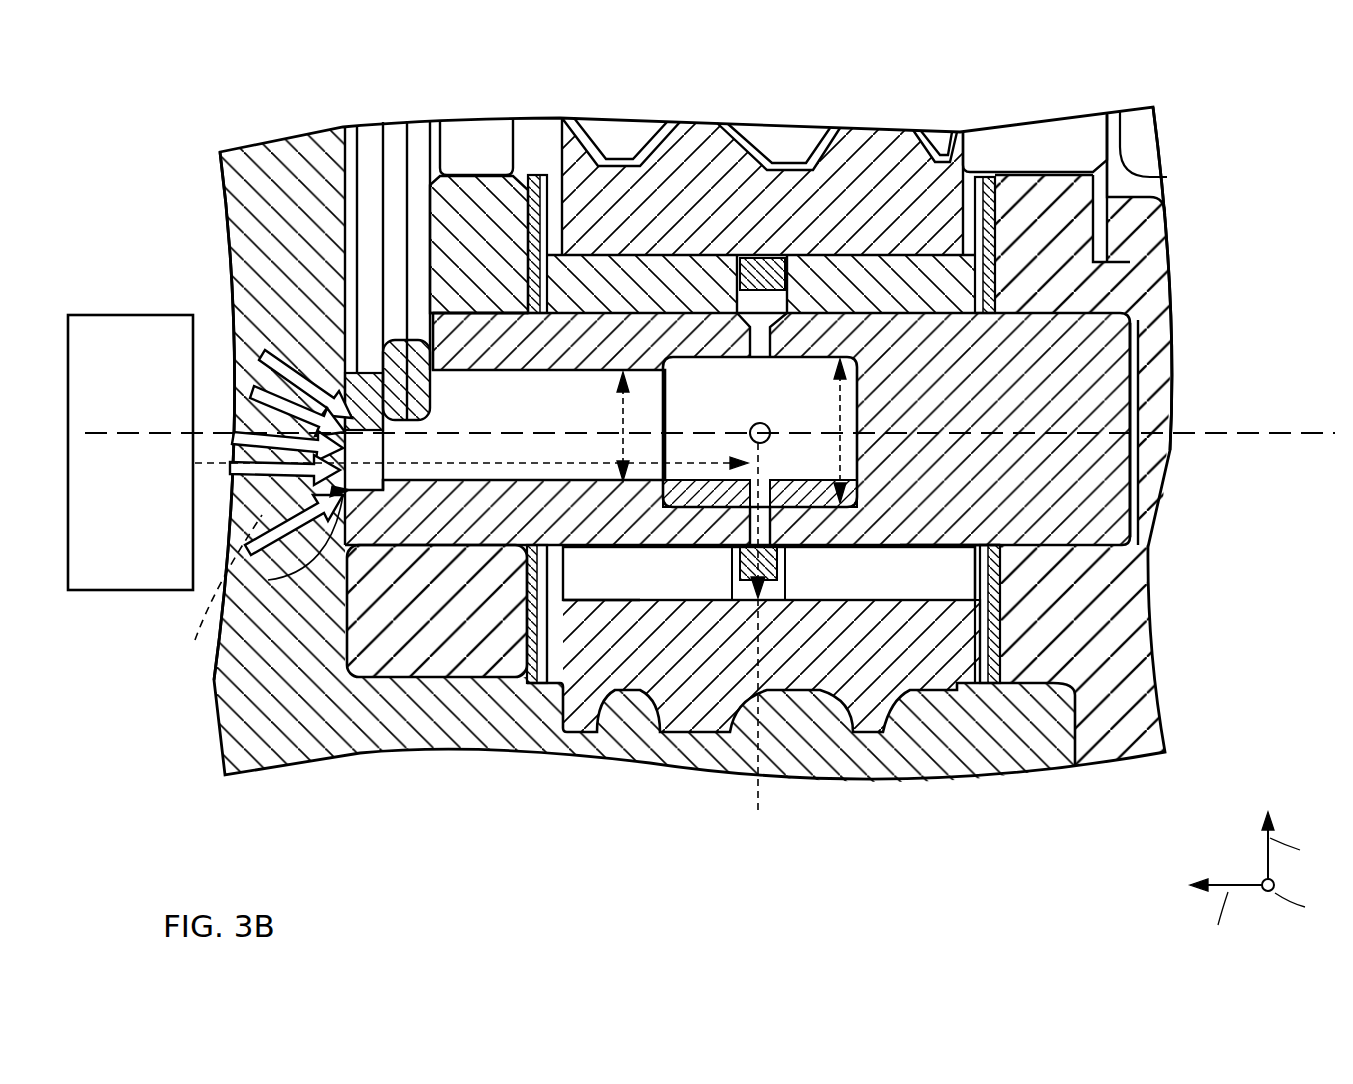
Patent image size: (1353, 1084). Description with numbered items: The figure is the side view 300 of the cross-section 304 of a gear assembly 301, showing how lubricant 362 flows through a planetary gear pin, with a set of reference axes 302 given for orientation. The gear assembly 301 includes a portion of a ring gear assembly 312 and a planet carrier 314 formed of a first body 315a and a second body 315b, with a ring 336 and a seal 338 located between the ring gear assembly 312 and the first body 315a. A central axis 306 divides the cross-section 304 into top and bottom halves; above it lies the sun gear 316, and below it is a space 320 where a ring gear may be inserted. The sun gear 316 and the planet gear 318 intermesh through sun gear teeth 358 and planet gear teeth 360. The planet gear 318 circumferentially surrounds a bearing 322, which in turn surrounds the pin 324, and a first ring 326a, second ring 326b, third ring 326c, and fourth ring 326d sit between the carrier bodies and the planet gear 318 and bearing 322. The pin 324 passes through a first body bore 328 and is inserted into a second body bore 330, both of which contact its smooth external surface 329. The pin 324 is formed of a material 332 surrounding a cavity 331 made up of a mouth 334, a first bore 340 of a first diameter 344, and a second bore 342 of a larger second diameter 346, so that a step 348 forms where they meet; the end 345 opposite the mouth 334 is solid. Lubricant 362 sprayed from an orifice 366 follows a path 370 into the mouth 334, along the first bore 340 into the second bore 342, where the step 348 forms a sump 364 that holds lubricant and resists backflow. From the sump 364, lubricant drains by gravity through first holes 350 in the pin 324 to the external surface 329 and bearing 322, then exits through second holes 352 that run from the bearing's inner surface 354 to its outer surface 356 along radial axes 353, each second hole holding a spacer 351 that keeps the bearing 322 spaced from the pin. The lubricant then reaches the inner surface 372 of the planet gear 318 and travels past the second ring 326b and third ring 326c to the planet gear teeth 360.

The side view 300 is at (183, 132).
The gear assembly 301 is at (1150, 137).
The reference axes 302 is at (1220, 843).
The cross-section 304 is at (296, 126).
The central axis 306 is at (1272, 432).
The ring gear assembly 312 is at (237, 262).
The planet carrier 314 is at (1167, 210).
The first body 315a is at (502, 160).
The second body 315b is at (1076, 160).
The sun gear 316 is at (798, 131).
The planet gear 318 is at (756, 224).
The space 320 is at (773, 722).
The bearing 322 is at (863, 292).
The pin 324 is at (1005, 307).
The first ring 326a is at (530, 255).
The second ring 326b is at (537, 215).
The third ring 326c is at (990, 218).
The fourth ring 326d is at (990, 255).
The first body bore 328 is at (470, 312).
The external surface 329 is at (528, 308).
The second body bore 330 is at (1137, 358).
The cavity 331 is at (290, 539).
The material 332 is at (1008, 394).
The mouth 334 is at (352, 385).
The ring 336 is at (362, 320).
The seal 338 is at (395, 273).
The first bore 340 is at (475, 417).
The second bore 342 is at (695, 410).
The first diameter 344 is at (618, 482).
The end 345 is at (1110, 417).
The second diameter 346 is at (838, 425).
The step 348 is at (662, 490).
The first holes 350 is at (782, 508).
The spacer 351 is at (745, 272).
The second holes 352 is at (745, 543).
The axes 353 is at (758, 800).
The inner surface 354 is at (940, 545).
The outer surface 356 is at (958, 608).
The sun gear teeth 358 is at (612, 132).
The planet gear teeth 360 is at (712, 132).
The lubricant 362 is at (272, 362).
The sump 364 is at (842, 502).
The orifice 366 is at (116, 315).
The path 370 is at (213, 586).
The inner surface 372 is at (598, 600).